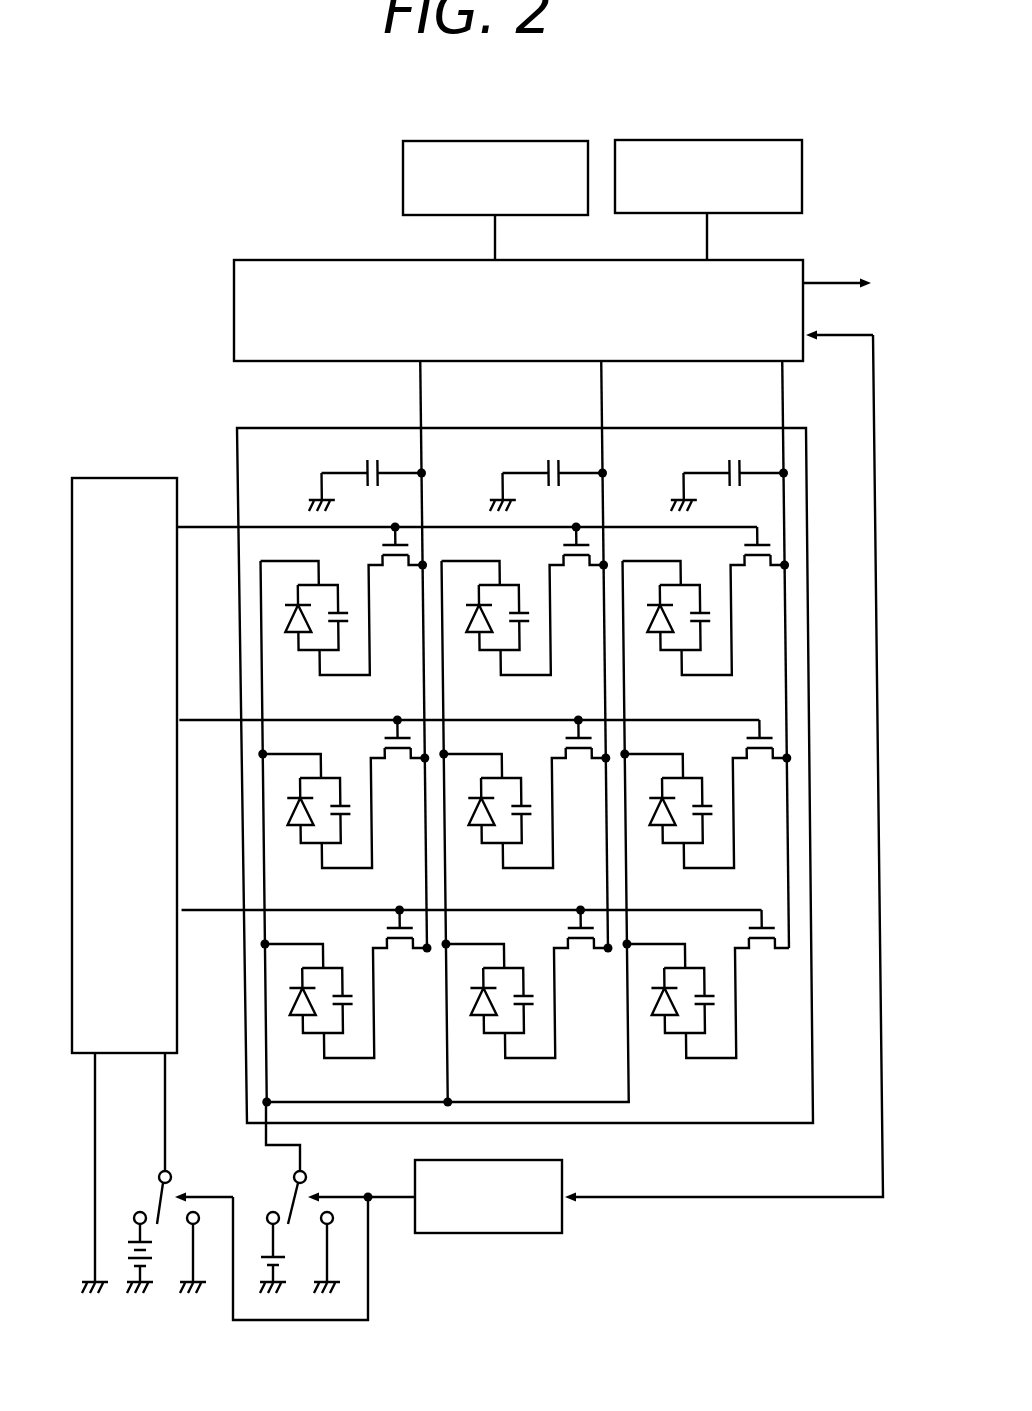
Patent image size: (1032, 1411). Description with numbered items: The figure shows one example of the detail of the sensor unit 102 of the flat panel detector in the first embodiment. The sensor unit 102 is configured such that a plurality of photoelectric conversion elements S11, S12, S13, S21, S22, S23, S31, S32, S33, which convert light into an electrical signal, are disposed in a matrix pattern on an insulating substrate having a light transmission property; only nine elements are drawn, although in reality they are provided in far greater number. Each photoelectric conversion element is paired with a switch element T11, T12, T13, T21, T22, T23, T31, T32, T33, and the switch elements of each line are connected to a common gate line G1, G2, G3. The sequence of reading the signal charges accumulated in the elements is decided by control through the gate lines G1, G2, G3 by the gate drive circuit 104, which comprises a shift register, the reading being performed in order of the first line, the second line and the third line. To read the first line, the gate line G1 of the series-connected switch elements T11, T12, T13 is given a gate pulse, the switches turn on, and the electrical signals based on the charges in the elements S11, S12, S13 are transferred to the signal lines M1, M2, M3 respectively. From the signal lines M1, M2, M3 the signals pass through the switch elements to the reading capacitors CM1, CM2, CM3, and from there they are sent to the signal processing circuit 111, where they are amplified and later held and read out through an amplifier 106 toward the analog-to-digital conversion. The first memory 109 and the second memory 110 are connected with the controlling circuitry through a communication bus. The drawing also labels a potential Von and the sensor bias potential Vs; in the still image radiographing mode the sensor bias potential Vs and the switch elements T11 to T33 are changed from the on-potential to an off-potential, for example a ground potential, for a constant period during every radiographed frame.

The first memory 109 is at (571, 140).
The second memory 110 is at (779, 140).
The signal processing circuit 111 is at (270, 260).
The sensor unit 102 is at (250, 428).
The gate drive circuit 104 is at (122, 478).
The amplifier 106 is at (528, 1234).
The signal line M1 is at (422, 386).
The signal line M2 is at (603, 386).
The signal line M3 is at (784, 386).
The gate line G1 is at (207, 527).
The gate line G2 is at (207, 720).
The gate line G3 is at (207, 910).
The reading capacitor CM1 is at (340, 473).
The reading capacitor CM2 is at (521, 473).
The reading capacitor CM3 is at (702, 473).
The photoelectric conversion element S11 is at (305, 639).
The photoelectric conversion element S12 is at (486, 639).
The photoelectric conversion element S13 is at (667, 639).
The photoelectric conversion element S21 is at (304, 830).
The photoelectric conversion element S22 is at (485, 830).
The photoelectric conversion element S23 is at (666, 830).
The photoelectric conversion element S31 is at (306, 1020).
The photoelectric conversion element S32 is at (487, 1020).
The photoelectric conversion element S33 is at (668, 1020).
The switch element T11 is at (373, 599).
The switch element T12 is at (554, 599).
The switch element T13 is at (735, 601).
The switch element T21 is at (375, 792).
The switch element T22 is at (556, 792).
The switch element T23 is at (737, 794).
The switch element T31 is at (377, 982).
The switch element T32 is at (558, 982).
The switch element T33 is at (738, 984).
The on-voltage power supply Von is at (157, 1258).
The sensor bias potential Vs is at (287, 1258).